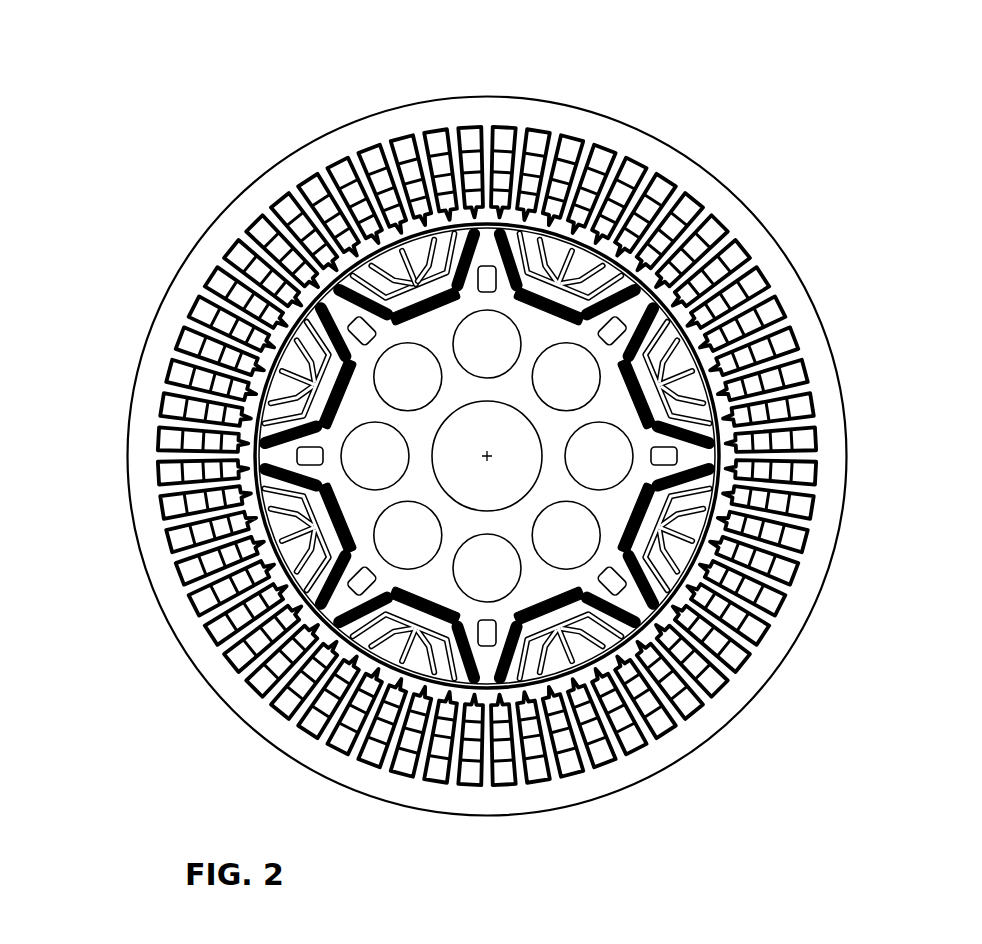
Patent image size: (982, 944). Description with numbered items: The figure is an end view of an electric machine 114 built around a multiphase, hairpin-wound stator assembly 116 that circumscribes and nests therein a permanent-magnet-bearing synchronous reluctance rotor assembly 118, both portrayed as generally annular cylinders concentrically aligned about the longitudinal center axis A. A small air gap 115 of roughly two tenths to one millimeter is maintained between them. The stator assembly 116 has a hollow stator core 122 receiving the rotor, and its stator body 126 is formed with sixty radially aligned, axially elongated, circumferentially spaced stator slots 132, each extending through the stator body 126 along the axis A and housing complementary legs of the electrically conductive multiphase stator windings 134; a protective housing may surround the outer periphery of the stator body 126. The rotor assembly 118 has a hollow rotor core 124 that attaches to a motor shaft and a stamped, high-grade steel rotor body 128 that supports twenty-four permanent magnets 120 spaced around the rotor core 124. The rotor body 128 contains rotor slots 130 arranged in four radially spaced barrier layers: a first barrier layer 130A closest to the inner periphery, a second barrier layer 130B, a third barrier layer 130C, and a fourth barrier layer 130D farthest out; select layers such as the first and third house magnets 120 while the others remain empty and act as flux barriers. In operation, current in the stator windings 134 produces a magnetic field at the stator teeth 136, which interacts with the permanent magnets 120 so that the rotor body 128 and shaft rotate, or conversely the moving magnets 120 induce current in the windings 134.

The electric machine 114 is at (833, 154).
The air gap 115 is at (502, 128).
The stator assembly 116 is at (838, 343).
The rotor assembly 118 is at (225, 472).
The permanent magnets 120 is at (253, 485).
The stator core 122 is at (740, 485).
The rotor core 124 is at (445, 430).
The stator body 126 is at (790, 262).
The rotor body 128 is at (487, 226).
The rotor slots 130 is at (381, 533).
The first barrier layer 130A is at (353, 276).
The second barrier layer 130B is at (383, 273).
The third barrier layer 130C is at (403, 258).
The fourth barrier layer 130D is at (431, 253).
The stator slots 132 is at (815, 412).
The stator windings 134 is at (793, 375).
The stator teeth 136 is at (598, 312).
The longitudinal center axis A is at (490, 457).